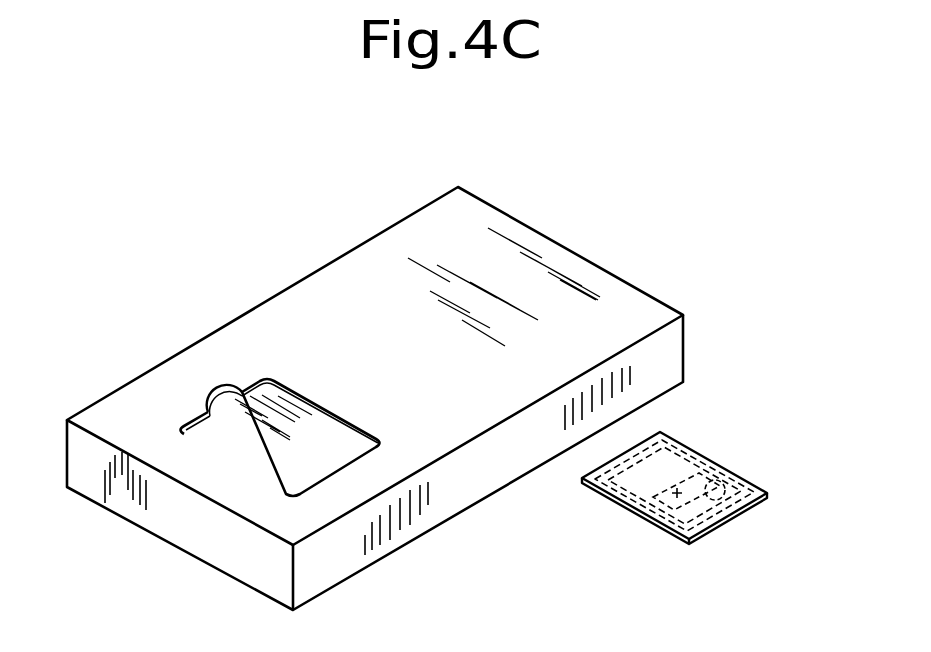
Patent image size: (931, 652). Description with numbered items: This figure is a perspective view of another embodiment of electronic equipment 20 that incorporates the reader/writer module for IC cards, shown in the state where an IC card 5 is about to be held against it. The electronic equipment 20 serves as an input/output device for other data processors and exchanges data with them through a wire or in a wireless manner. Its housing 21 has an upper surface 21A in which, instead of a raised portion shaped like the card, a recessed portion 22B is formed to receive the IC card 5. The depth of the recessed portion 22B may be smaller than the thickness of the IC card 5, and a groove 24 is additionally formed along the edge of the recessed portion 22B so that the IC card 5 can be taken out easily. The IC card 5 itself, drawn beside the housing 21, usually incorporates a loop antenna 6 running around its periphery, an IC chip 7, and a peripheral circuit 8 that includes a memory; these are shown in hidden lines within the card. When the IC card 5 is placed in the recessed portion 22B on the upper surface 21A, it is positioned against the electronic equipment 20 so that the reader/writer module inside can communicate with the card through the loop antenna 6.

The electronic equipment 20 is at (604, 190).
The housing 21 is at (641, 282).
The upper surface 21A is at (312, 312).
The recessed portion 22B is at (328, 442).
The groove 24 is at (213, 385).
The IC card 5 is at (733, 439).
The loop antenna 6 is at (677, 442).
The IC chip 7 is at (717, 486).
The peripheral circuit 8 is at (677, 494).